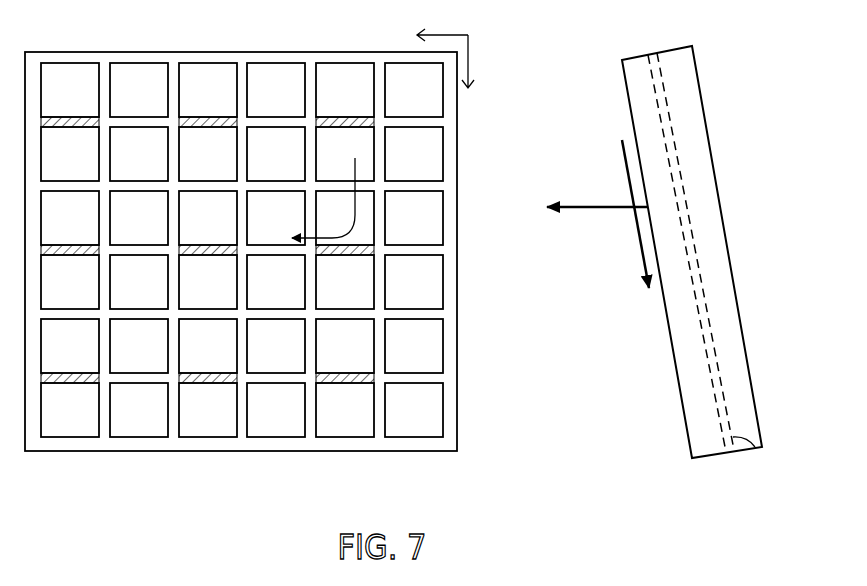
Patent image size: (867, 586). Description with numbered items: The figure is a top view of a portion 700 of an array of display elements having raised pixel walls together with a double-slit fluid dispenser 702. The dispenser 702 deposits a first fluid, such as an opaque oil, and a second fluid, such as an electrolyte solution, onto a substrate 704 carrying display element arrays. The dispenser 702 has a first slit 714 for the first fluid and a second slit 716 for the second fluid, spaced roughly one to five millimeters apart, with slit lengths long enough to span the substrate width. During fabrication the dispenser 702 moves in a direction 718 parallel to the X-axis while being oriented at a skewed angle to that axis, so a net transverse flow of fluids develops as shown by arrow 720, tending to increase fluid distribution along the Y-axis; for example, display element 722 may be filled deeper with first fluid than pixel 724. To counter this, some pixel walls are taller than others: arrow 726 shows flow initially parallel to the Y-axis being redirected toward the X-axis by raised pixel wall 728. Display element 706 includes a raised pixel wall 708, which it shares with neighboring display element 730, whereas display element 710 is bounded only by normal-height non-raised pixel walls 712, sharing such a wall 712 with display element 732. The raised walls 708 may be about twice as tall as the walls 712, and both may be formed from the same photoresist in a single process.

The portion of an array of display elements 700 is at (522, 30).
The double-slit fluid dispenser 702 is at (694, 47).
The substrate 704 is at (275, 52).
The display element 706 is at (187, 354).
The raised pixel wall 708 is at (228, 384).
The display element 710 is at (256, 354).
The non-raised pixel wall 712 is at (105, 430).
The first slit 714 is at (717, 406).
The second slit 716 is at (755, 447).
The direction 718 is at (607, 205).
The arrow 720 is at (638, 238).
The display element 722 is at (394, 419).
The pixel 724 is at (394, 101).
The arrow 726 is at (354, 167).
The raised pixel wall 728 is at (353, 256).
The display element 730 is at (185, 419).
The display element 732 is at (253, 419).